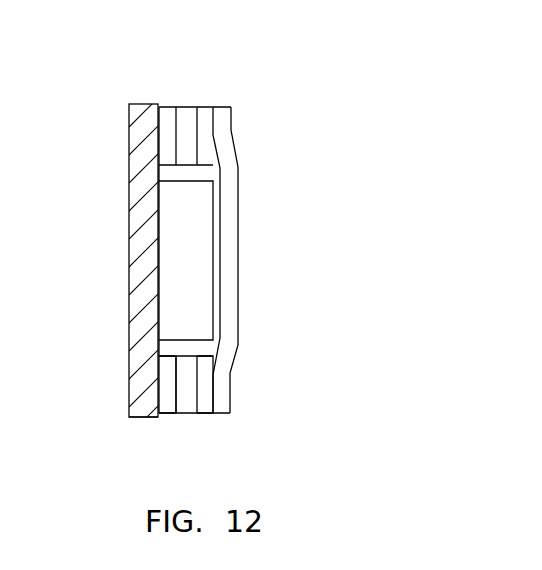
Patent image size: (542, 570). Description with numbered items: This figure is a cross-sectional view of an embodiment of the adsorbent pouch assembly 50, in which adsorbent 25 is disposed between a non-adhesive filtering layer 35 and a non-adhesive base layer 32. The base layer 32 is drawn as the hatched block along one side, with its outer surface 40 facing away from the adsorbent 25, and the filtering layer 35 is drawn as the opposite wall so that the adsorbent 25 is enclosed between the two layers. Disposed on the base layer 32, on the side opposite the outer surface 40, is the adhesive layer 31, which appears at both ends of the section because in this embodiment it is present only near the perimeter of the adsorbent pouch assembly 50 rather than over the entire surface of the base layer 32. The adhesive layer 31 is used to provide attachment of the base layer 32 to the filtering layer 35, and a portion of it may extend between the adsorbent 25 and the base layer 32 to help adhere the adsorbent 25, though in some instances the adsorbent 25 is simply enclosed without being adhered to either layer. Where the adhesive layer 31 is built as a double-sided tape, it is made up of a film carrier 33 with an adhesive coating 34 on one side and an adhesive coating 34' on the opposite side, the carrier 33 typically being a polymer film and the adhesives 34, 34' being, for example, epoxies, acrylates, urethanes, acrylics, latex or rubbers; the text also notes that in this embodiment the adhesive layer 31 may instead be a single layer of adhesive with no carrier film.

The adsorbent pouch assembly 50 is at (240, 83).
The base layer 32 is at (147, 104).
The outer surface 40 is at (128, 394).
The adhesive layer 31 is at (213, 102).
The adsorbent 25 is at (203, 255).
The filtering layer 35 is at (230, 200).
The carrier 33 is at (178, 413).
The adhesive layer 34 is at (183, 423).
The adhesive layer 34' is at (247, 415).